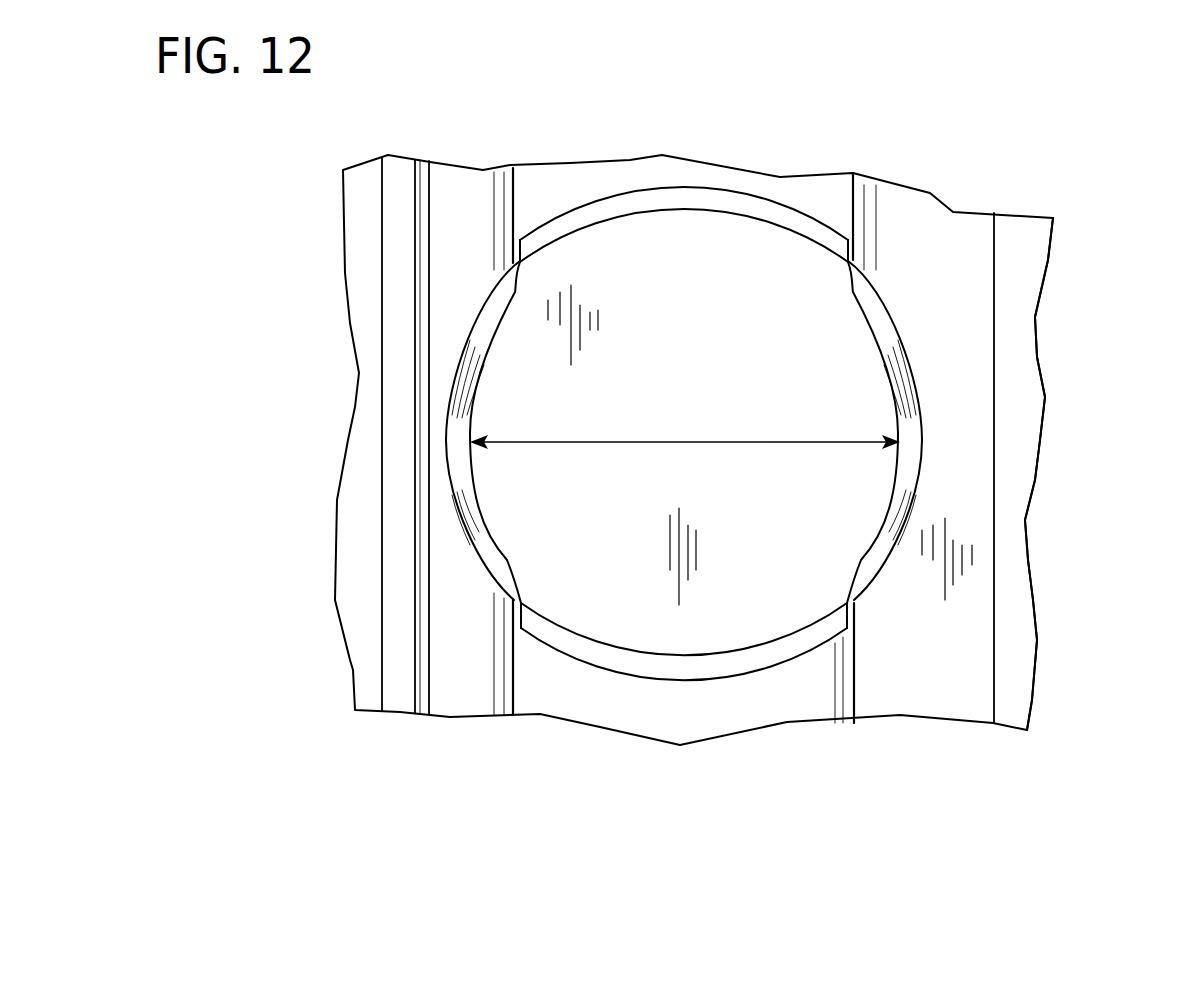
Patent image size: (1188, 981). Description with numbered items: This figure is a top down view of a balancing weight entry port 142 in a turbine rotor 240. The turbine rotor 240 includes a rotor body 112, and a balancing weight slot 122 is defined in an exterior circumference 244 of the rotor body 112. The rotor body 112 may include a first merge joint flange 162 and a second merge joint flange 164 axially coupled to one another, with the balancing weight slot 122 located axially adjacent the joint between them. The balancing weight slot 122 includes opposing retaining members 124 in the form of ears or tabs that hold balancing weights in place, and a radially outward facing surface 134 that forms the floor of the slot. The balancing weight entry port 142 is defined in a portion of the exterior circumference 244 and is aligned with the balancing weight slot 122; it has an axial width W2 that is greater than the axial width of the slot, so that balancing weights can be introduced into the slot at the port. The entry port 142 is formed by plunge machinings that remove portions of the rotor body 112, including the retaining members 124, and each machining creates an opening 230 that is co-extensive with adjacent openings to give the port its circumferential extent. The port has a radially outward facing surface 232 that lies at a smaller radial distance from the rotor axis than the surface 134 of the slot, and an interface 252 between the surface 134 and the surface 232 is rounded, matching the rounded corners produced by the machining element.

The turbine rotor 240 is at (1043, 265).
The exterior circumference 244 is at (955, 248).
The first merge joint flange 162 is at (1104, 474).
The second merge joint flange 164 is at (1025, 372).
The rotor body 112 is at (970, 593).
The retaining members 124 is at (870, 666).
The interface 252 is at (566, 230).
The opening 230 is at (458, 480).
The balancing weight entry port 142 is at (753, 283).
The radially outward facing surface 232 is at (685, 412).
The axial width W2 is at (623, 444).
The radially outward facing surface 134 is at (782, 692).
The balancing weight slot 122 is at (802, 687).